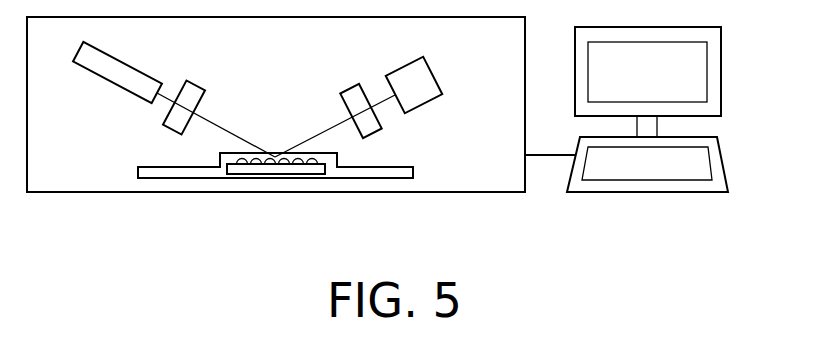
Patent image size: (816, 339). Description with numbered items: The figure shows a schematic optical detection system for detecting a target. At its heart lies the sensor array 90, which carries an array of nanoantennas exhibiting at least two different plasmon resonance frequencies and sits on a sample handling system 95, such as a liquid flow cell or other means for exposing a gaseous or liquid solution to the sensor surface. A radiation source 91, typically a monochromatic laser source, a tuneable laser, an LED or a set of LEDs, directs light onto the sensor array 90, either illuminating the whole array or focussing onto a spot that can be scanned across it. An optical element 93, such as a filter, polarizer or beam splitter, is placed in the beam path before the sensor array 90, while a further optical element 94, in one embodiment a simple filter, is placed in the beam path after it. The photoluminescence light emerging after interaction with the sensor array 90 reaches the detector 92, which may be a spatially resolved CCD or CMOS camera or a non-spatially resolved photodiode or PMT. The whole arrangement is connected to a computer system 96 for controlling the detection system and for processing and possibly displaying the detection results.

The sensor array 90 is at (317, 174).
The radiation source 91 is at (108, 83).
The detector 92 is at (428, 105).
The optical element 93 is at (193, 80).
The optical element 94 is at (348, 87).
The sample handling system 95 is at (138, 170).
The computer system 96 is at (721, 68).